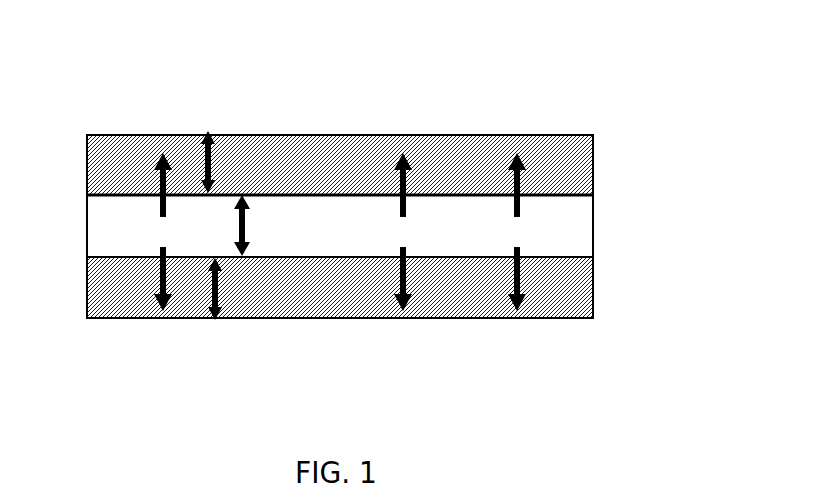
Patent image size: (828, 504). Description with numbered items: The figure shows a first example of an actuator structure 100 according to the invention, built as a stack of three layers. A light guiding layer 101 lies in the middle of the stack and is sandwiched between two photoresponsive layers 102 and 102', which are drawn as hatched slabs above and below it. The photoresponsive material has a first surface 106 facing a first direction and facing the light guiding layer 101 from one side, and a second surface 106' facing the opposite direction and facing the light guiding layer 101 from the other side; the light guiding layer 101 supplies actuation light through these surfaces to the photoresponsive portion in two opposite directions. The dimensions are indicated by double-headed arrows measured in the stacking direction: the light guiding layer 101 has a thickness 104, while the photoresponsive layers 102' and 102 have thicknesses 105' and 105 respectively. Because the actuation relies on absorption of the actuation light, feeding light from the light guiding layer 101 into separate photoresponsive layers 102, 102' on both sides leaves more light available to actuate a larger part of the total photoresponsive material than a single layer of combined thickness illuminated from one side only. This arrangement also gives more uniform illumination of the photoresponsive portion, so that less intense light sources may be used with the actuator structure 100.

The actuator structure 100 is at (138, 78).
The light guiding layer 101 is at (556, 229).
The photoresponsive layer 102 is at (391, 251).
The photoresponsive layer 102' is at (393, 129).
The thickness 104 is at (247, 225).
The thickness 105 is at (284, 322).
The thickness 105' is at (290, 138).
The first surface 106 is at (340, 315).
The second surface 106' is at (340, 151).